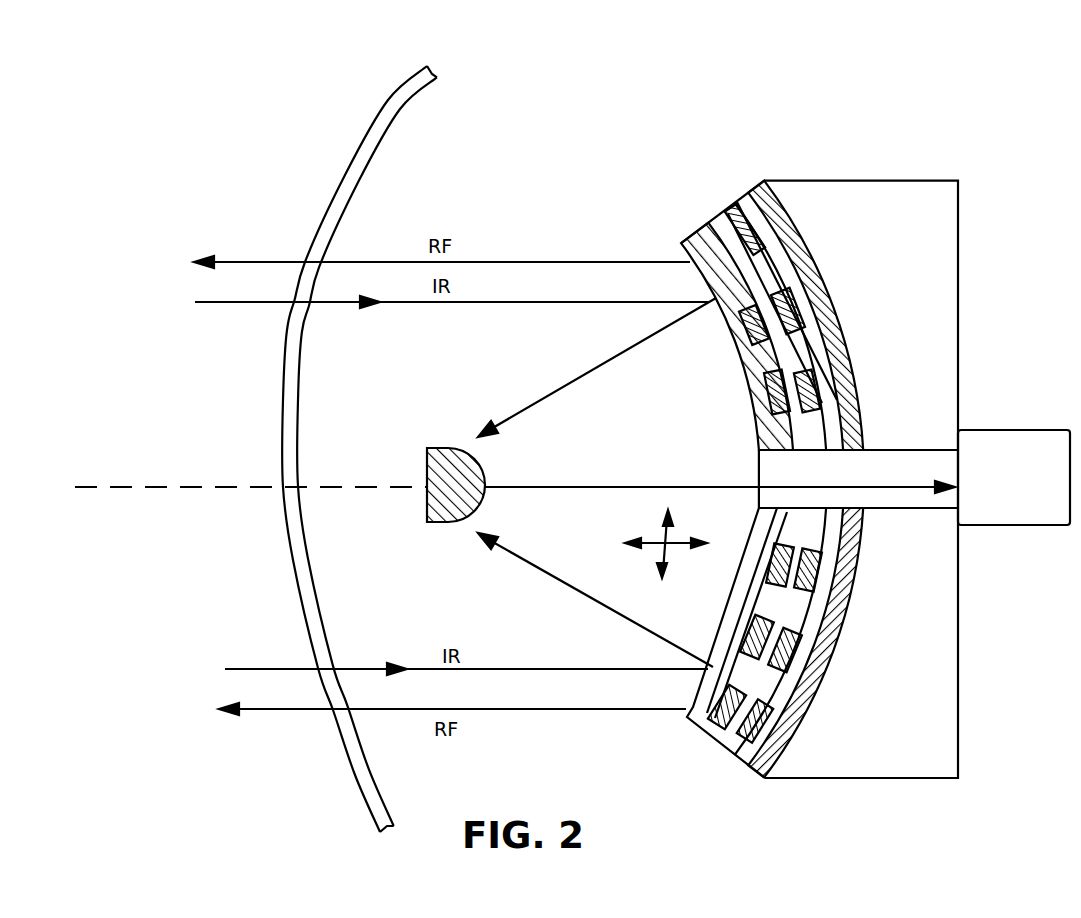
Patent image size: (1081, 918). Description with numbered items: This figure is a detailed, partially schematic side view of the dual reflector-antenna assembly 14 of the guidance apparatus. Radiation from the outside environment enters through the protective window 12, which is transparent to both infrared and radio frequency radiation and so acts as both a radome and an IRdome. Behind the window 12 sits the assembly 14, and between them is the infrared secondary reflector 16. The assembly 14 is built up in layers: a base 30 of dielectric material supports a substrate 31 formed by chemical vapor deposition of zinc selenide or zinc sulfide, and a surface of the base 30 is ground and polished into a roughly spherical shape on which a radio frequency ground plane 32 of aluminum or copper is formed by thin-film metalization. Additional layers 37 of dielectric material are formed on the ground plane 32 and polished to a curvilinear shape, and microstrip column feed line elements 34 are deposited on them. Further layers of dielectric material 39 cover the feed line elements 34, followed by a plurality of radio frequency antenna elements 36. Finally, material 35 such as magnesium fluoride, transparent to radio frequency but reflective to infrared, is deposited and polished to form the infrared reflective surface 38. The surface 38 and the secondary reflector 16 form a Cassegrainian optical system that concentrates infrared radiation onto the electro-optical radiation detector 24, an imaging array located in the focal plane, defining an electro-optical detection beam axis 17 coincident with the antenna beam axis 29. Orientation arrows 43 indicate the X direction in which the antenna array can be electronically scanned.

The protective window 12 is at (359, 470).
The dual reflector-antenna assembly 14 is at (768, 856).
The infrared secondary reflector 16 is at (471, 448).
The electro-optical detection beam axis 17 is at (227, 488).
The electro-optical radiation detector 24 is at (1036, 432).
The antenna beam axis 29 is at (283, 490).
The base 30 is at (846, 292).
The substrate 31 is at (745, 780).
The radio frequency ground plane 32 is at (775, 175).
The microstrip column feed line elements 34 is at (777, 738).
The reflective coating material 35 is at (698, 237).
The radio frequency antenna elements 36 is at (740, 196).
The additional layers of dielectric material 37 is at (826, 583).
The infrared reflective surface 38 is at (690, 243).
The additional layers of dielectric material 39 is at (775, 688).
The orientation arrows 43 is at (662, 550).